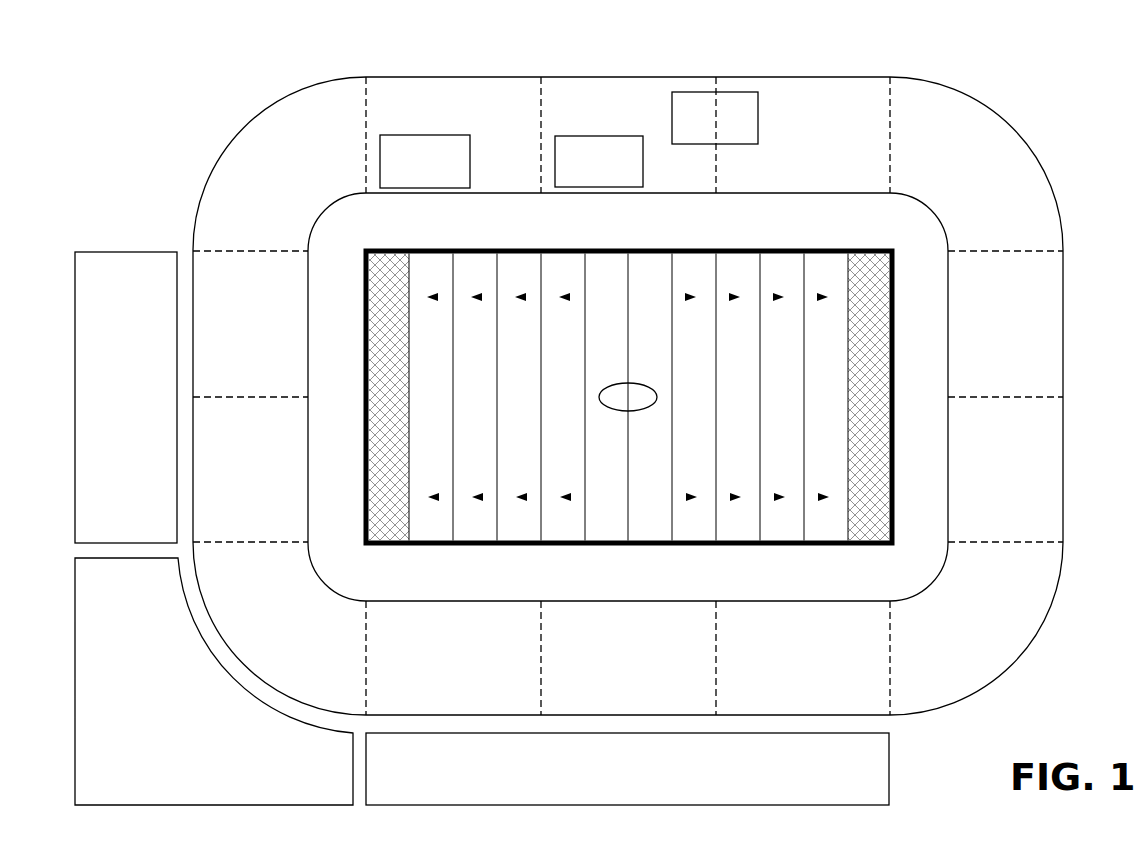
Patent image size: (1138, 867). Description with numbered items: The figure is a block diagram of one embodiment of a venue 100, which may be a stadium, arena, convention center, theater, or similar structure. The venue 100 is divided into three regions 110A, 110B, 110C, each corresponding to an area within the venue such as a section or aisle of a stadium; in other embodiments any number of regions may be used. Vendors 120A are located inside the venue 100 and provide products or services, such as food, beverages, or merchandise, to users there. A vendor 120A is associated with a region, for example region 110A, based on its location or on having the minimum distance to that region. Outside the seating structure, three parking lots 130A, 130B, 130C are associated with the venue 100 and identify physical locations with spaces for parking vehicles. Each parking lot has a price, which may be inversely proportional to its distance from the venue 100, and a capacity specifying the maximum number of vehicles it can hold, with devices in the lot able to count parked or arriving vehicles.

The venue 100 is at (774, 75).
The region 110A is at (433, 110).
The region 110B is at (607, 110).
The region 110C is at (782, 110).
The vendor 120A is at (405, 182).
The parking lot 130A is at (106, 429).
The parking lot 130B is at (153, 753).
The parking lot 130C is at (608, 790).